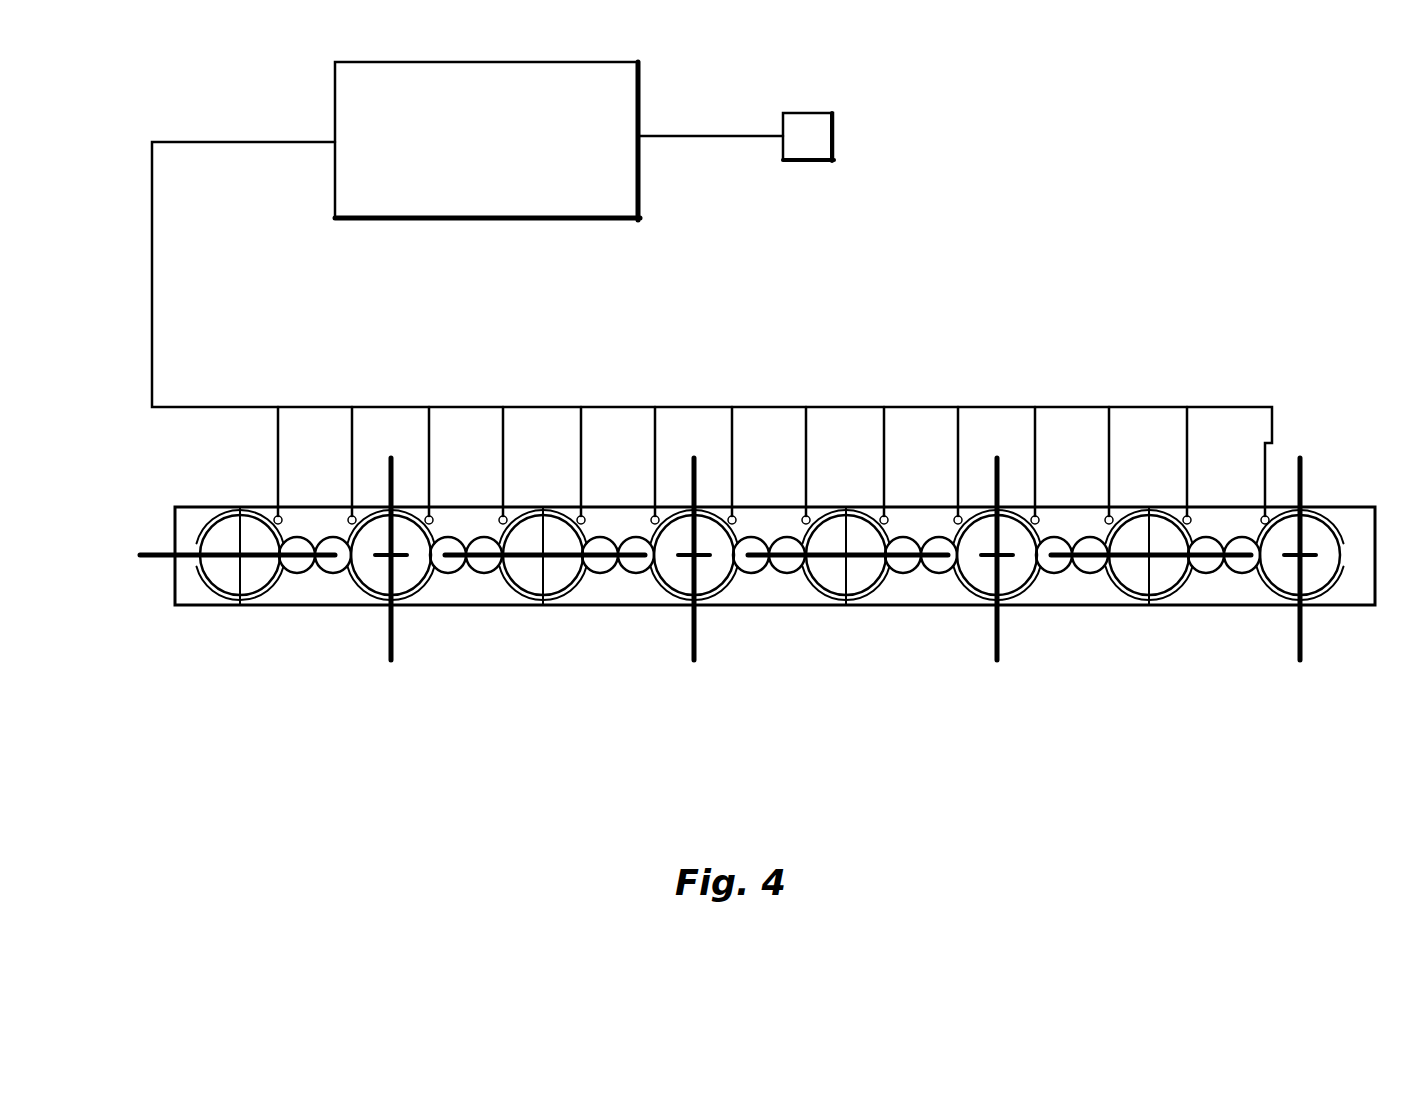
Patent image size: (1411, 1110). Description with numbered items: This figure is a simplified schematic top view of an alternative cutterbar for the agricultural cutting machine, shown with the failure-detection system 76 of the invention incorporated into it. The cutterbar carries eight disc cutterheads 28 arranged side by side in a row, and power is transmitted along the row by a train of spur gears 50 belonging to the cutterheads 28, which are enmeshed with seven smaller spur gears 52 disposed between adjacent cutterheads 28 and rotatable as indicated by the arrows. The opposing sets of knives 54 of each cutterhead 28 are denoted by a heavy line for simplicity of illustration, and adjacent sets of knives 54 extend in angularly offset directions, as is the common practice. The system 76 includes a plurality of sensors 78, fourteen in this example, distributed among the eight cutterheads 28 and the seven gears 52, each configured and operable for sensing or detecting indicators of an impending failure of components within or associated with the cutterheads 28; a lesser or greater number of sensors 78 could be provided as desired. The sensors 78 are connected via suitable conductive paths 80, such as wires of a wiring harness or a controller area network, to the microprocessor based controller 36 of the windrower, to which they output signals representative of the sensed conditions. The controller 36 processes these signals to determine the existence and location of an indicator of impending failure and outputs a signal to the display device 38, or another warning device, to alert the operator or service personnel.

The disc cutterheads 28 is at (764, 645).
The spur gears 50 is at (197, 590).
The microprocessor based controller 36 is at (640, 74).
The display device 38 is at (835, 137).
The spur gears 52 is at (330, 575).
The sets of knives 54 is at (160, 552).
The system 76 is at (1062, 178).
The sensors 78 is at (352, 515).
The conductive paths 80 is at (152, 296).